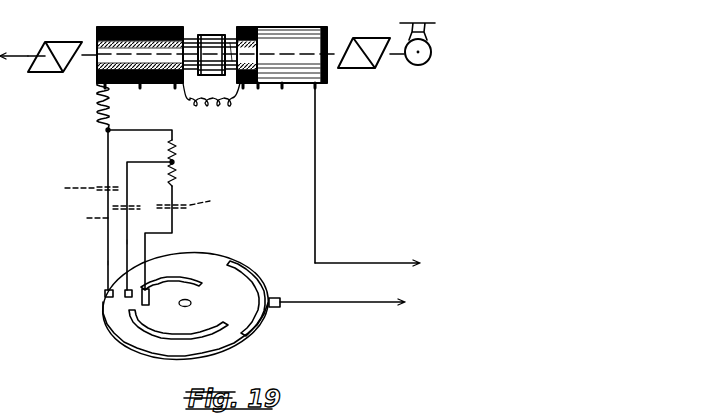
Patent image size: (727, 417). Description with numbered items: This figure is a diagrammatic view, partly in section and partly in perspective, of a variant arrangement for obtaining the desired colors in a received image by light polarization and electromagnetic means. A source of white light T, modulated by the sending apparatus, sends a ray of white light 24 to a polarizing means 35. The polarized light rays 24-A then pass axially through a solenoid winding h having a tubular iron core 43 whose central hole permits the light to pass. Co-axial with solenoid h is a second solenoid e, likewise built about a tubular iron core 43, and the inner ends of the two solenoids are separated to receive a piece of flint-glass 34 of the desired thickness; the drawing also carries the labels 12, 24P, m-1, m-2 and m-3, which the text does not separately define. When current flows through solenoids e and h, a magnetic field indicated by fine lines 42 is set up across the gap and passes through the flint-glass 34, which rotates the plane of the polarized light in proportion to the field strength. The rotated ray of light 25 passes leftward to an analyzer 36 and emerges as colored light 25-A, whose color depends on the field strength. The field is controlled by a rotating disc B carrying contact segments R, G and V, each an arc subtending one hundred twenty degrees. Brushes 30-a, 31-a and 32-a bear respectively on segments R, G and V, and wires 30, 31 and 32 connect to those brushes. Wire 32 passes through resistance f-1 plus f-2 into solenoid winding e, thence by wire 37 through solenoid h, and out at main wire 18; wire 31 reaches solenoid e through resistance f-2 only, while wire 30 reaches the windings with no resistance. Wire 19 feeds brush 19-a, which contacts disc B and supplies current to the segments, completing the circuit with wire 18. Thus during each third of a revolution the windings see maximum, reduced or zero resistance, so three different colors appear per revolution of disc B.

The colored light 25-A is at (16, 44).
The analyzer 36 is at (47, 72).
The ray of light 25 is at (86, 58).
The tubular iron core 43 is at (134, 27).
The solenoid e is at (142, 84).
The magnetic field 42 is at (197, 75).
The wire 37 is at (235, 100).
The flint-glass 34 is at (215, 34).
The lens 12 is at (234, 42).
The polarizer tube 24P is at (240, 40).
The solenoid winding h is at (283, 84).
The polarized light rays 24-A is at (338, 50).
The polarizing means 35 is at (369, 45).
The ray of white light 24 is at (392, 58).
The source of white light T is at (417, 66).
The resistance f-2 is at (177, 149).
The resistance f-1 is at (177, 184).
The contact m-1 is at (77, 190).
The contact m-2 is at (96, 216).
The contact m-3 is at (198, 203).
The wire 31 is at (127, 242).
The wire 30 is at (108, 263).
The wire 32 is at (147, 256).
The brush 32-a is at (203, 254).
The brush 31-a is at (107, 290).
The brush 30-a is at (103, 294).
The rotating disc B is at (112, 315).
The contact segment G is at (142, 332).
The contact segment V is at (199, 278).
The contact segment R is at (267, 290).
The brush 19-a is at (279, 308).
The wire 19 is at (344, 300).
The main wire 18 is at (353, 263).